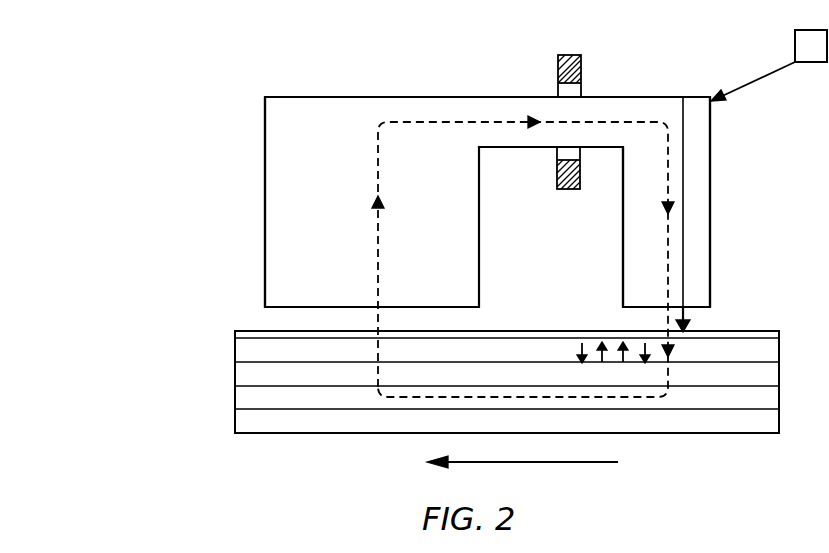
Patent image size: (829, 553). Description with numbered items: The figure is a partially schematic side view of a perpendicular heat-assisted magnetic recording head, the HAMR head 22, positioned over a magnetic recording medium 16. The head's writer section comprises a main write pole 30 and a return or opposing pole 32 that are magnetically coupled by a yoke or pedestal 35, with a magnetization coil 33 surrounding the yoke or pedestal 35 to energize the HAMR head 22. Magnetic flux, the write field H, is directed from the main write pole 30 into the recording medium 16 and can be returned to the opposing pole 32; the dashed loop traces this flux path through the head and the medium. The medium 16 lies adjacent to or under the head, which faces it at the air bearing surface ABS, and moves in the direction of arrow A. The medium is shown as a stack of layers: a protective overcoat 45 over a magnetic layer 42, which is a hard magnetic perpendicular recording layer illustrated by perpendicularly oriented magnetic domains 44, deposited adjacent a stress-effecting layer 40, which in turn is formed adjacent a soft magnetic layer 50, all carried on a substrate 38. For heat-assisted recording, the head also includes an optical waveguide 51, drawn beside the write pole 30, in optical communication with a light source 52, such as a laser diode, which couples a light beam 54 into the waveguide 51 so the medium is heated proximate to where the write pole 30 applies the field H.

The HAMR head 22 is at (222, 110).
The return or opposing pole 32 is at (273, 207).
The main write pole 30 is at (635, 248).
The yoke or pedestal 35 is at (611, 105).
The optical waveguide 51 is at (697, 229).
The magnetization coil 33 is at (558, 71).
The light source 52 is at (795, 48).
The light beam 54 is at (758, 86).
The magnetic write field / flux H is at (378, 165).
The magnetic recording medium 16 is at (190, 309).
The protective overcoat 45 is at (234, 330).
The magnetic layer 42 is at (240, 350).
The stress-effecting layer 40 is at (240, 371).
The soft magnetic layer 50 is at (240, 394).
The substrate 38 is at (240, 419).
The perpendicular oriented magnetic domains 44 is at (575, 349).
The air bearing surface ABS is at (645, 307).
The arrow A is at (510, 463).